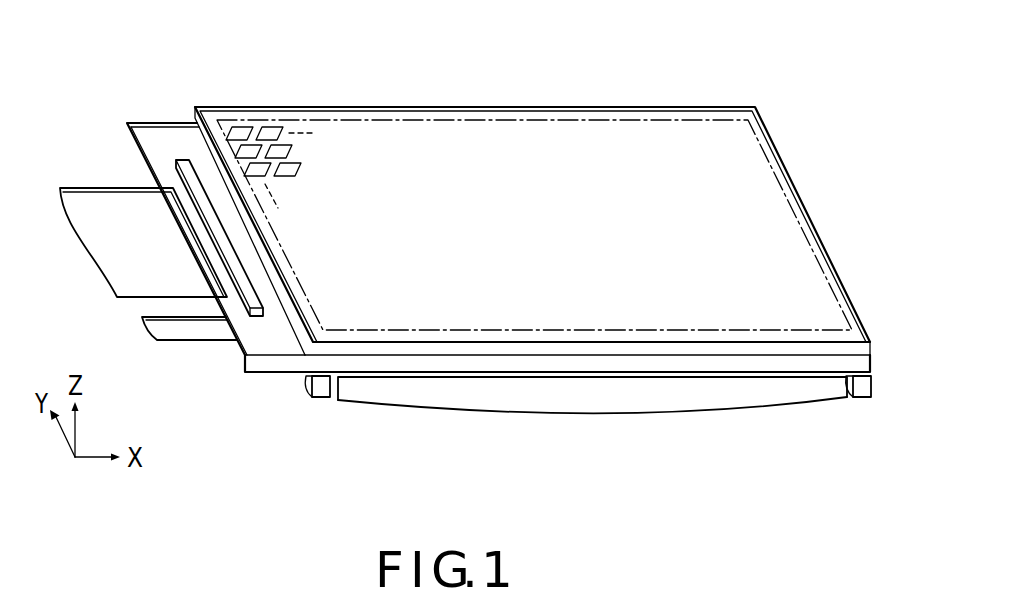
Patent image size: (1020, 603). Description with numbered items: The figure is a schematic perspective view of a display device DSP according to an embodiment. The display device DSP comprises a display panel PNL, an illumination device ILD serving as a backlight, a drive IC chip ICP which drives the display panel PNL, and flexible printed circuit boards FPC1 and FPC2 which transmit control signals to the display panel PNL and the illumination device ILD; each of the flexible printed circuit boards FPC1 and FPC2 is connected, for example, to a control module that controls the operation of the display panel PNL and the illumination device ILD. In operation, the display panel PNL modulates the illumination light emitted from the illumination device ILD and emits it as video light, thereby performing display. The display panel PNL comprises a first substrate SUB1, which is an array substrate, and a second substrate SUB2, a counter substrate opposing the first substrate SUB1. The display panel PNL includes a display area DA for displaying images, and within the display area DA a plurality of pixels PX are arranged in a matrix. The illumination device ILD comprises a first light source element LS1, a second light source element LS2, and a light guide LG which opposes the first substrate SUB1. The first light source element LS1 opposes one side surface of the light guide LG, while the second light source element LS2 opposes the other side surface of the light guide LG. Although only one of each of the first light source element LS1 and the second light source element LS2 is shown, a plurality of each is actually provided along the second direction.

The display device DSP is at (692, 83).
The display panel PNL is at (777, 463).
The first substrate SUB1 is at (670, 370).
The second substrate SUB2 is at (737, 350).
The display area DA is at (449, 120).
The pixel PX is at (268, 131).
The drive IC chip ICP is at (180, 160).
The flexible printed circuit board FPC1 is at (97, 188).
The flexible printed circuit board FPC2 is at (195, 340).
The illumination device ILD is at (514, 431).
The light guide LG is at (405, 392).
The first light source element LS1 is at (321, 397).
The second light source element LS2 is at (865, 397).